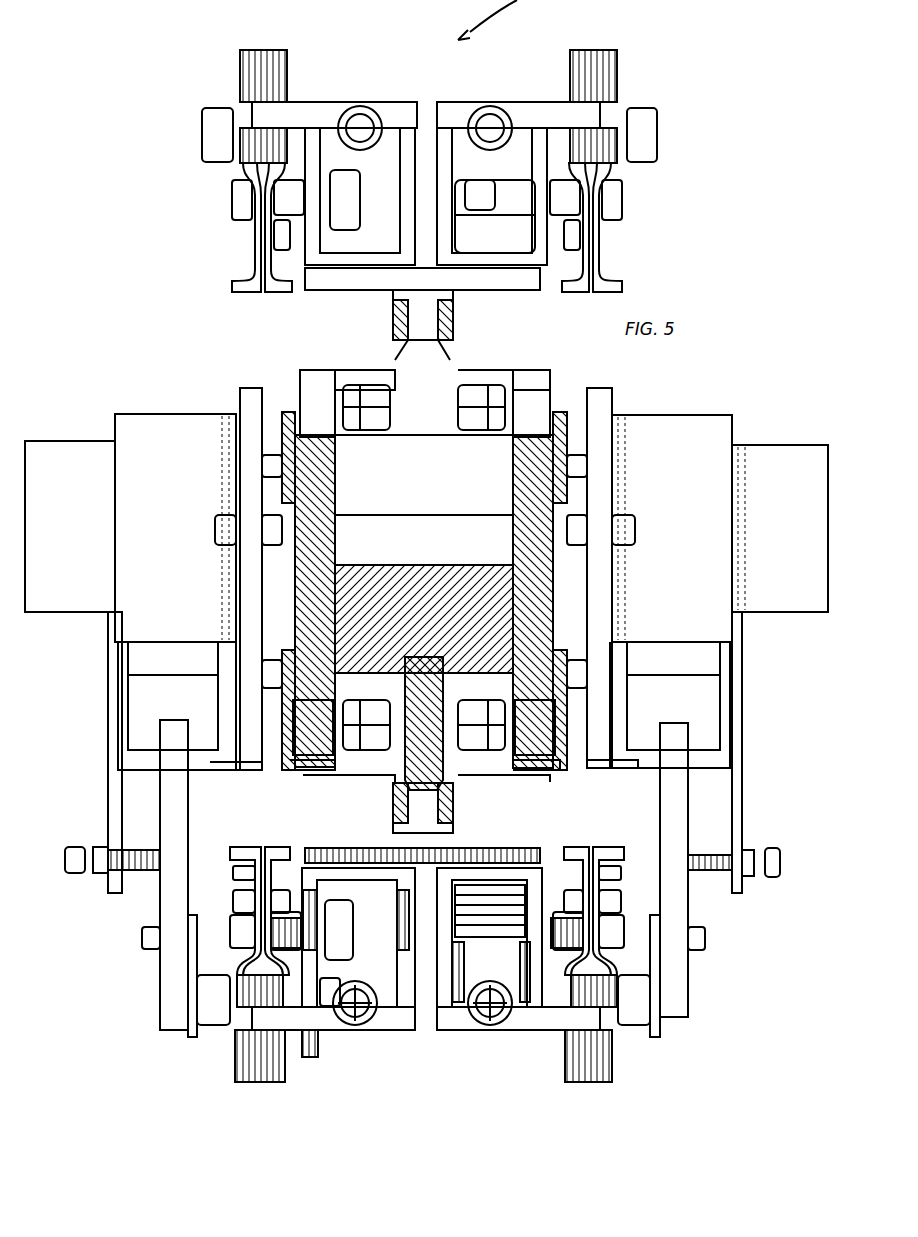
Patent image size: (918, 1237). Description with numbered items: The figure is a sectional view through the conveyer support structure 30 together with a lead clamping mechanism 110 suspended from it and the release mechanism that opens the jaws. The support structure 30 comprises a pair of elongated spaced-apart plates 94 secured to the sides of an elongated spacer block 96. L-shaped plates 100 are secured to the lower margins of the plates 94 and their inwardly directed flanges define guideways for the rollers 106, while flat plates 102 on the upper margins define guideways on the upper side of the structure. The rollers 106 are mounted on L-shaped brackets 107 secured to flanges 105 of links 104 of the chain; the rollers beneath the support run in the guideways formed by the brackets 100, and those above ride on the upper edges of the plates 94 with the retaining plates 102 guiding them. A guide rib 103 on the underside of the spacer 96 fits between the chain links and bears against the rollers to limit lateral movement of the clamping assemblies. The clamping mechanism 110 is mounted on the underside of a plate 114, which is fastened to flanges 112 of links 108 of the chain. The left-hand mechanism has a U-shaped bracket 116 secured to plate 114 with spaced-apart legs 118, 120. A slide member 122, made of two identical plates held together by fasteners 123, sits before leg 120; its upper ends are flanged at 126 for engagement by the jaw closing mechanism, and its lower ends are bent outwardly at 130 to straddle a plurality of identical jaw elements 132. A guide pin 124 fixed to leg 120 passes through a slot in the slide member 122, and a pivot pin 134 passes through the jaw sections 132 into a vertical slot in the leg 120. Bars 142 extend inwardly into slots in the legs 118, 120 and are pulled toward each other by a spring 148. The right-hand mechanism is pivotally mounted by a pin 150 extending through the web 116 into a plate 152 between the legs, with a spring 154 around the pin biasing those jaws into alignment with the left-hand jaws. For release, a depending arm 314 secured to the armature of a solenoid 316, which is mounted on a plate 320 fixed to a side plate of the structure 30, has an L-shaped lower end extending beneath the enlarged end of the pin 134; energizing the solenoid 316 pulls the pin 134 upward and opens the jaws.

The conveyer support structure 30 is at (200, 355).
The elongated spaced-apart plates 94 is at (335, 468).
The elongated spacer block 96 is at (385, 665).
The L-shaped plates 100 is at (300, 775).
The flat plates 102 is at (280, 392).
The guide rib 103 is at (440, 705).
The links 104 is at (423, 567).
The flanges 105 is at (442, 372).
The rollers 106 is at (318, 380).
The L-shaped brackets 107 is at (365, 372).
The links 108 is at (500, 835).
The lead clamping mechanism 110 is at (425, 1085).
The flanges 112 is at (335, 870).
The plate 114 is at (330, 280).
The U-shaped bracket 116 is at (355, 258).
The leg 118 is at (405, 932).
The leg 120 is at (315, 968).
The slide member 122 is at (250, 866).
The fasteners 123 is at (236, 897).
The guide pin 124 is at (240, 930).
The flanges 126 is at (265, 852).
The outwardly bent lower ends 130 is at (248, 952).
The jaw elements 132 is at (264, 34).
The pivot pin 134 is at (222, 1035).
The bars 142 is at (350, 112).
The spring 148 is at (382, 1052).
The pin 150 is at (478, 948).
The plate 152 is at (490, 931).
The spring 154 is at (480, 888).
The depending arm 314 is at (172, 800).
The solenoid 316 is at (182, 555).
The plate 320 is at (620, 415).